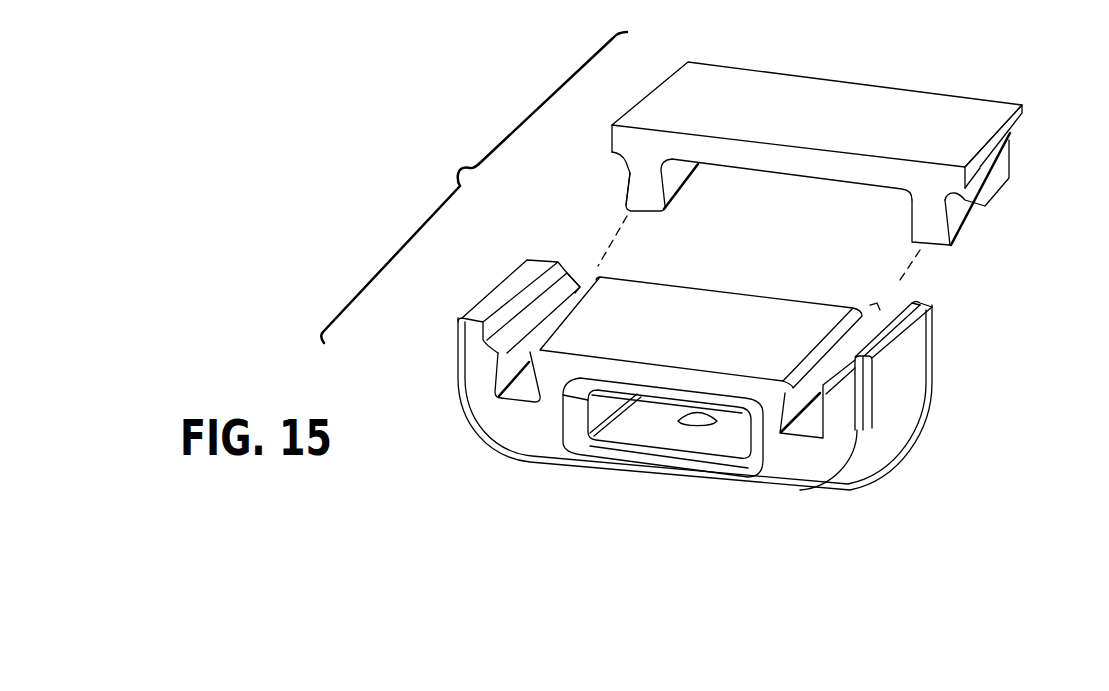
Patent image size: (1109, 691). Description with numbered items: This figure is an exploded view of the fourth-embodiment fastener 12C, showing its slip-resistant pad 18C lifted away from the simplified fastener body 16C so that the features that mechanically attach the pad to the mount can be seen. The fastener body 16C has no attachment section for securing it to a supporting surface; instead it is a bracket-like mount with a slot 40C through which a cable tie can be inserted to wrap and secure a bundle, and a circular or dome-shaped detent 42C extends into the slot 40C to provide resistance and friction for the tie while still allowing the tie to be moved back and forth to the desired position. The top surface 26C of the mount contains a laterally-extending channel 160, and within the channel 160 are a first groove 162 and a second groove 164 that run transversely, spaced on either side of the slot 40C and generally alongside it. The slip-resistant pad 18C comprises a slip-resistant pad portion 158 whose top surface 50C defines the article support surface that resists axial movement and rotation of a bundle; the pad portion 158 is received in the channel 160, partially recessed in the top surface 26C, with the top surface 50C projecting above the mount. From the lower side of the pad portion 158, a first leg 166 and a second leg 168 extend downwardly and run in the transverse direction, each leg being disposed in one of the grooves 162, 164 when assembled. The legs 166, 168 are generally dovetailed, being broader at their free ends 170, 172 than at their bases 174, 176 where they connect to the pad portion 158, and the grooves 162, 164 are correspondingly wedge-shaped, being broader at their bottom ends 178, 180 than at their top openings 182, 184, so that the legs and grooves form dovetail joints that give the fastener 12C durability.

The fastener 12C is at (474, 187).
The fastener body 16C is at (706, 354).
The slip-resistant pad 18C is at (799, 141).
The top surface 26C is at (917, 292).
The slot 40C is at (643, 425).
The detent 42C is at (696, 414).
The top surface 50C is at (953, 120).
The slip-resistant pad portion 158 is at (743, 157).
The channel 160 is at (733, 308).
The first groove 162 is at (527, 325).
The second groove 164 is at (858, 353).
The first leg 166 is at (655, 215).
The second leg 168 is at (912, 250).
The free end 170 is at (625, 218).
The free end 172 is at (947, 258).
The base 174 is at (614, 155).
The base 176 is at (980, 205).
The bottom end 178 is at (523, 392).
The bottom end 180 is at (803, 428).
The top opening 182 is at (580, 277).
The top opening 184 is at (880, 305).